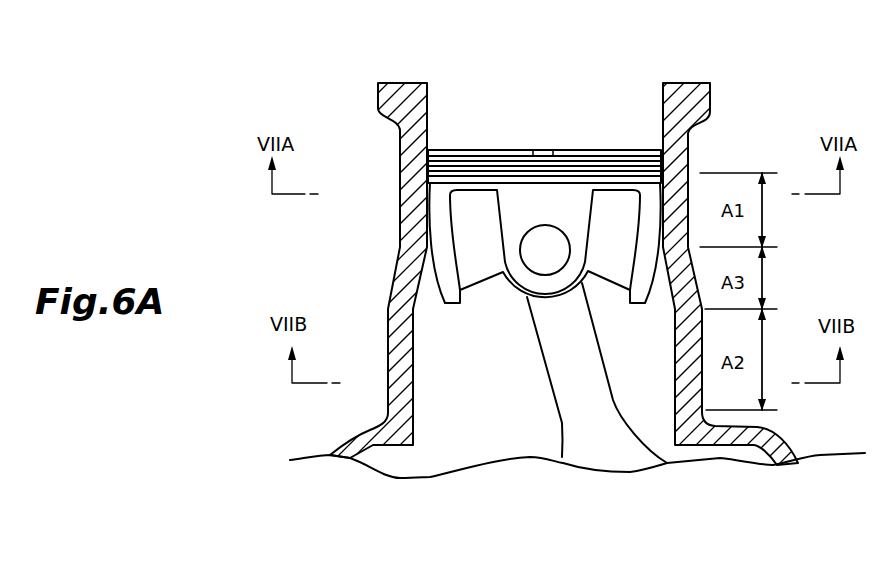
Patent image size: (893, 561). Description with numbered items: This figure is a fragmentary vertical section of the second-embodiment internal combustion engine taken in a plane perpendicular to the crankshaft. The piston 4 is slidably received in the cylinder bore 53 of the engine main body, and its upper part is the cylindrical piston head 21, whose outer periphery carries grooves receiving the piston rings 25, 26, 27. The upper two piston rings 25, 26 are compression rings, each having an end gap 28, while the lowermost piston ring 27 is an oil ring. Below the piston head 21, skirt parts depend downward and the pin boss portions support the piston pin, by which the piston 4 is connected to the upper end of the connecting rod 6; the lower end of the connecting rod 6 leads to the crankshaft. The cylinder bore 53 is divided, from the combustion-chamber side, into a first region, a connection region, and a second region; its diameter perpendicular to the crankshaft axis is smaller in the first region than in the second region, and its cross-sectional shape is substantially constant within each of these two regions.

The piston 4 is at (498, 165).
The piston head 21 is at (483, 148).
The end gap 28 is at (548, 156).
The piston ring 25 is at (443, 155).
The piston ring 26 is at (432, 172).
The piston ring 27 is at (430, 178).
The cylinder bore 53 is at (661, 100).
The connecting rod 6 is at (588, 445).